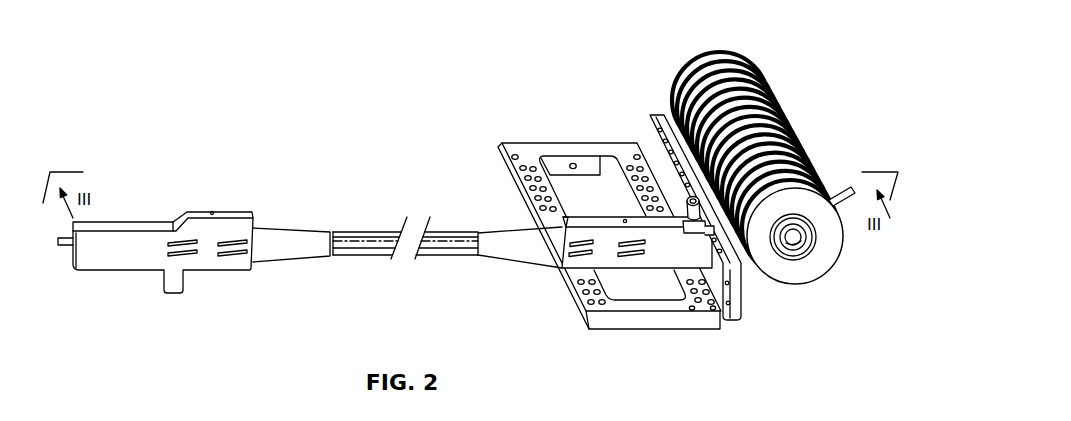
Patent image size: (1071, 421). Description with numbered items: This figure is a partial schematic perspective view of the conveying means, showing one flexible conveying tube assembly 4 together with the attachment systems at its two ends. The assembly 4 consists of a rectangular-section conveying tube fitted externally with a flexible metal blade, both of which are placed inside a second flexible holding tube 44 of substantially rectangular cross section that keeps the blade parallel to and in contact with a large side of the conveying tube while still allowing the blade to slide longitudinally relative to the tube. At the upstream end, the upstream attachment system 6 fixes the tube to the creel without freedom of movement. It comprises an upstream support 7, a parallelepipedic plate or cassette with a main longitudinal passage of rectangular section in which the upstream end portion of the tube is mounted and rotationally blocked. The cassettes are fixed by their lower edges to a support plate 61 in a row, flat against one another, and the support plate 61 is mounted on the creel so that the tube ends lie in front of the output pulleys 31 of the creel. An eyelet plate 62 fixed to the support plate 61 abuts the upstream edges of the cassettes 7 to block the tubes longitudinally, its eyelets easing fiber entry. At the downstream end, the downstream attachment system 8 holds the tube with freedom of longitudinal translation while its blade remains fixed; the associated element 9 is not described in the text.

The conveying tube fitted with its blade and placed in the holding tube 4 is at (407, 234).
The holding tube 44 is at (356, 257).
The upstream attachment system 6 is at (676, 192).
The support plate 61 is at (646, 328).
The eyelet plate 62 is at (739, 318).
The upstream support 7 is at (573, 267).
The downstream attachment system 8 is at (150, 212).
The connector body 9 is at (120, 270).
The output pulleys 31 is at (733, 53).